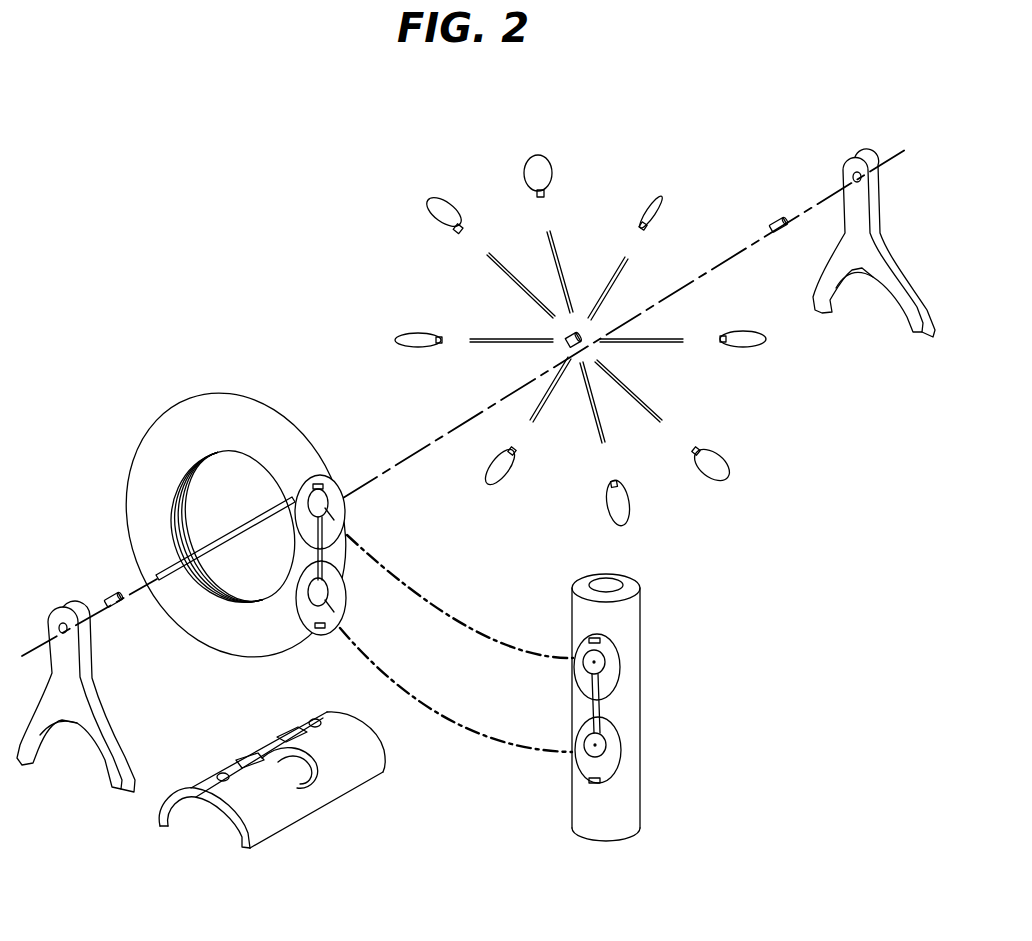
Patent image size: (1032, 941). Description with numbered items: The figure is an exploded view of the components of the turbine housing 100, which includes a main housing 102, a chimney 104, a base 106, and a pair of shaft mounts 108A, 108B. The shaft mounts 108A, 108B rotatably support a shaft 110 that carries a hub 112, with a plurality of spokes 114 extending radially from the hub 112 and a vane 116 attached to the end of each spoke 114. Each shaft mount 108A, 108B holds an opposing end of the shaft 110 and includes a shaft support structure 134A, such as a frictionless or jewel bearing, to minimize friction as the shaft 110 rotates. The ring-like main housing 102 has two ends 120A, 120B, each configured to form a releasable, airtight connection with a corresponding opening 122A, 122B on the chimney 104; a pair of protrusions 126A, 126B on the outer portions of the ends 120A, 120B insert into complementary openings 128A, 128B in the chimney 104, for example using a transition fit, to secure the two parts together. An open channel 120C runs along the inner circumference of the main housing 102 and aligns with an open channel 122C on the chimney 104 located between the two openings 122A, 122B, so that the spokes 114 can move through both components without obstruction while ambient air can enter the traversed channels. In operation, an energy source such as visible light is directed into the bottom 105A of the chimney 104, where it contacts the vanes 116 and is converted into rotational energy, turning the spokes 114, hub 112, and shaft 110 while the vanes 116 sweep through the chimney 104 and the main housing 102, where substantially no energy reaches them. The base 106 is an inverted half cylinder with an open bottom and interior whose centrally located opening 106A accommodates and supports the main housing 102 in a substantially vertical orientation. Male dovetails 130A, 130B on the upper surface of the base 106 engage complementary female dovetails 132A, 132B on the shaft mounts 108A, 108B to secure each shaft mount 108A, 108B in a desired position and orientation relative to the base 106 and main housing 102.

The turbine housing 100 is at (163, 171).
The main housing 102 is at (178, 395).
The chimney 104 is at (640, 714).
The bottom 105A is at (607, 858).
The base 106 is at (272, 838).
The centrally located opening 106A is at (300, 786).
The shaft mount 108A is at (63, 607).
The shaft mount 108B is at (852, 158).
The shaft 110 is at (247, 530).
The hub 112 is at (582, 344).
The spokes 114 is at (560, 262).
The vanes 116 is at (440, 202).
The main housing end 120A is at (342, 510).
The main housing end 120B is at (305, 617).
The open channel 120C is at (218, 590).
The chimney opening 122A is at (575, 650).
The chimney opening 122B is at (572, 768).
The open channel 122C is at (573, 693).
The protrusion 126A is at (318, 484).
The protrusion 126B is at (320, 628).
The opening 128A is at (602, 640).
The opening 128B is at (602, 781).
The male dovetail 130A is at (248, 758).
The male dovetail 130B is at (297, 733).
The female dovetail 132A is at (70, 725).
The female dovetail 132B is at (865, 272).
The shaft support structure 134A is at (113, 592).